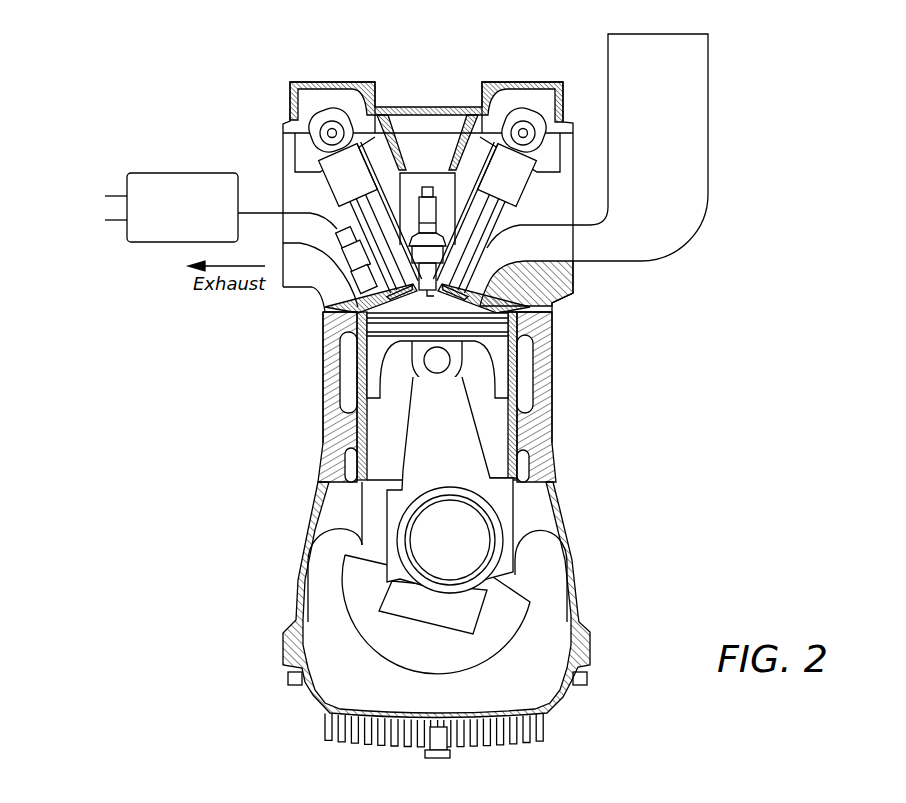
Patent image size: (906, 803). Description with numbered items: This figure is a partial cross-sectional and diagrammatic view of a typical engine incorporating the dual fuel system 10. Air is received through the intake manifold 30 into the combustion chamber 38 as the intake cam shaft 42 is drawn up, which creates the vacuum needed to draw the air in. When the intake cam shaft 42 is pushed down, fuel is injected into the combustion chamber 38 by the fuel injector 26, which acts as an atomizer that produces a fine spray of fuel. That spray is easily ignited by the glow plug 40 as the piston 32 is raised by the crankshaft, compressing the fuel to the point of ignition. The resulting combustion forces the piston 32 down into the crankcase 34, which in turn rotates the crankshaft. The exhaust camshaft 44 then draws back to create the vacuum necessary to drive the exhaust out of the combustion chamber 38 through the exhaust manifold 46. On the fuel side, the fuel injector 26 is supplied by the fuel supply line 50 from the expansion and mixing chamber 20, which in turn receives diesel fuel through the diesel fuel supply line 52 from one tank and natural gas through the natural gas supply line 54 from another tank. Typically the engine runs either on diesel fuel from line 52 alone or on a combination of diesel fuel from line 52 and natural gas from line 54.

The dual fuel system 10 is at (65, 170).
The expansion and mixing chamber 20 is at (172, 177).
The fuel injector 26 is at (358, 275).
The intake manifold 30 is at (693, 112).
The piston 32 is at (498, 372).
The crankcase 34 is at (547, 555).
The combustion chamber 38 is at (465, 308).
The glow plug 40 is at (429, 187).
The intake cam shaft 42 is at (552, 278).
The exhaust camshaft 44 is at (358, 195).
The exhaust manifold 46 is at (299, 280).
The fuel supply line 50 is at (270, 213).
The diesel fuel supply line 52 is at (120, 195).
The natural gas supply line 54 is at (118, 220).